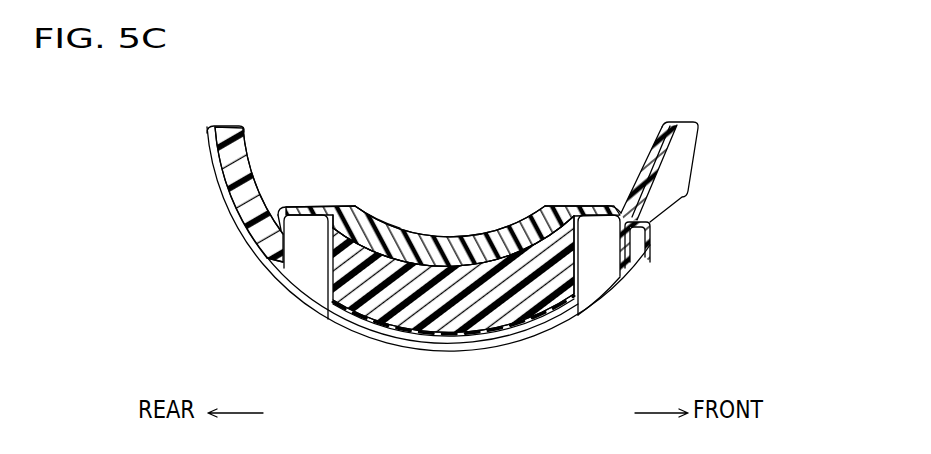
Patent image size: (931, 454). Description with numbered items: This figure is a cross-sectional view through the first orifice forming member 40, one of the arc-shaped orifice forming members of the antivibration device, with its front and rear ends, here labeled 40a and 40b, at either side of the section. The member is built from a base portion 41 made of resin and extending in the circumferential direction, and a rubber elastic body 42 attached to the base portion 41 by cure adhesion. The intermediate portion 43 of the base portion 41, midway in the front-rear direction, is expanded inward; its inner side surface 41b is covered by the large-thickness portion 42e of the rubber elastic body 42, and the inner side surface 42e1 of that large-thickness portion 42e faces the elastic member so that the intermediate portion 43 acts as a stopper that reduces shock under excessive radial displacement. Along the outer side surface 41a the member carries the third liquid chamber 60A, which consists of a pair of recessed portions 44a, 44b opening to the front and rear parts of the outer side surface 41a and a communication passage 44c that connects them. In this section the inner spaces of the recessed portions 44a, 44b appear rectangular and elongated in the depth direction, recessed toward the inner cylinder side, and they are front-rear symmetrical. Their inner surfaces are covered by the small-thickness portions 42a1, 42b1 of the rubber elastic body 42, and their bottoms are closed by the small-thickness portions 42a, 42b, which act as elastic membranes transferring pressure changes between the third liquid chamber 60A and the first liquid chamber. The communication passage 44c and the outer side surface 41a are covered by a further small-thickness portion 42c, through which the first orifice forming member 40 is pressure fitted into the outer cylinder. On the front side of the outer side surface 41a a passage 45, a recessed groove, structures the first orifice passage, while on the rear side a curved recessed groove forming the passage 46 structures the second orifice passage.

The first orifice forming member 40 is at (626, 117).
The front arm 40a is at (683, 127).
The rear arm 40b is at (212, 125).
The base portion 41 is at (517, 310).
The outer side surface 41a is at (424, 346).
The inner side surface 41b is at (475, 240).
The rubber elastic body 42 is at (525, 208).
The small-thickness portion 42a is at (611, 207).
The small-thickness portion 42a1 is at (590, 257).
The small-thickness portion 42b is at (305, 208).
The small-thickness portion 42b1 is at (333, 255).
The small-thickness portion 42c is at (222, 173).
The large-thickness portion 42e is at (420, 238).
The inner side surface 42e1 is at (389, 212).
The intermediate portion 43 is at (373, 204).
The recessed portion 44a is at (597, 271).
The recessed portion 44b is at (297, 267).
The communication passage 44c is at (535, 320).
The passage 45 is at (660, 198).
The passage 46 is at (258, 256).
The third liquid chamber 60A is at (628, 296).